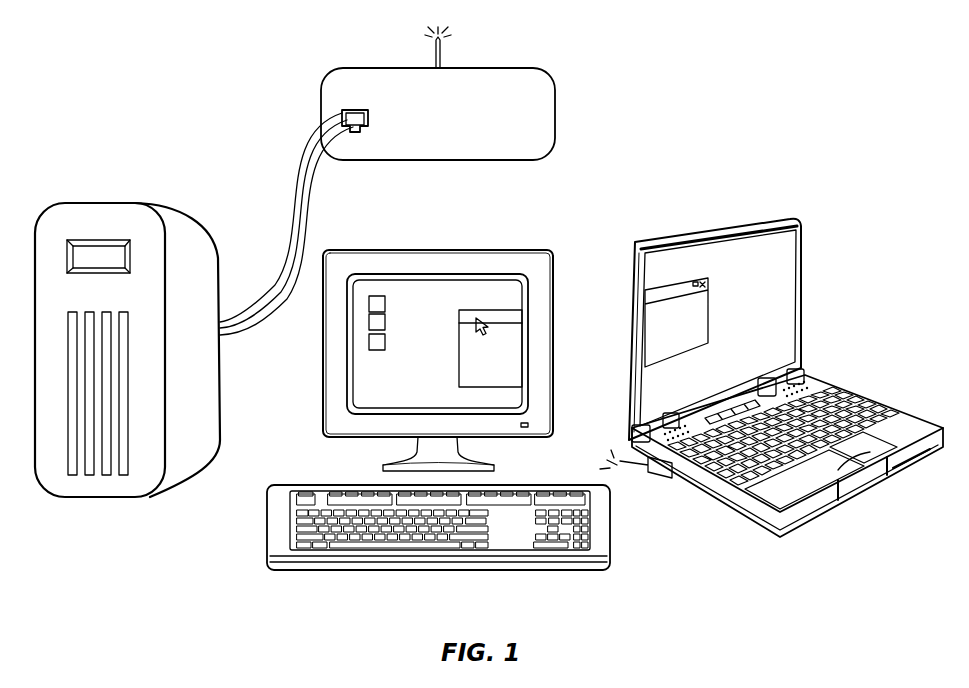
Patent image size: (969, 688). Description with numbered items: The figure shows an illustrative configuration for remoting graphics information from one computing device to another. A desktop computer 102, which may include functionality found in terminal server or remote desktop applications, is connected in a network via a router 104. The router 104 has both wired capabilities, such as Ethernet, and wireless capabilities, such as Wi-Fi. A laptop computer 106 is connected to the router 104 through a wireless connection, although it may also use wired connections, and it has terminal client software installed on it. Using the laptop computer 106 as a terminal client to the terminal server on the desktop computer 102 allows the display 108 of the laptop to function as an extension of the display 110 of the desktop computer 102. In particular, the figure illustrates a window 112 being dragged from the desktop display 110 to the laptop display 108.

The desktop computer 102 is at (325, 414).
The router 104 is at (485, 68).
The laptop computer 106 is at (720, 312).
The laptop display 108 is at (771, 360).
The desktop display 110 is at (492, 274).
The window 112 is at (677, 283).